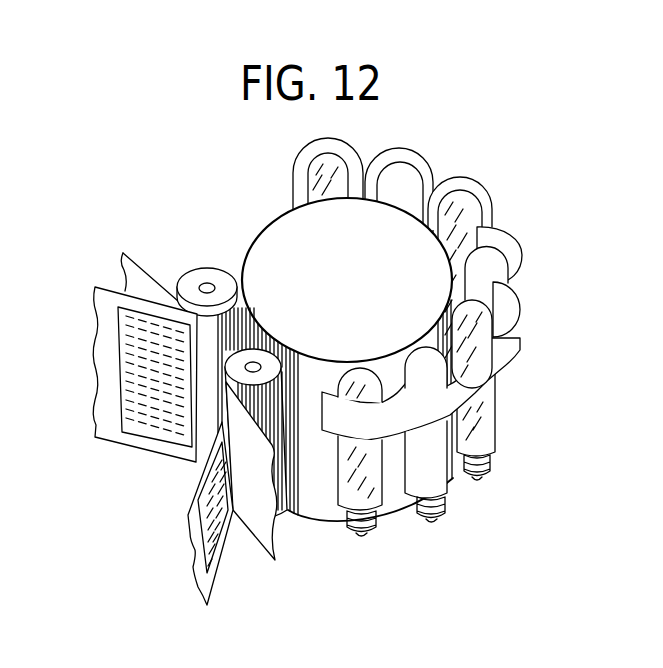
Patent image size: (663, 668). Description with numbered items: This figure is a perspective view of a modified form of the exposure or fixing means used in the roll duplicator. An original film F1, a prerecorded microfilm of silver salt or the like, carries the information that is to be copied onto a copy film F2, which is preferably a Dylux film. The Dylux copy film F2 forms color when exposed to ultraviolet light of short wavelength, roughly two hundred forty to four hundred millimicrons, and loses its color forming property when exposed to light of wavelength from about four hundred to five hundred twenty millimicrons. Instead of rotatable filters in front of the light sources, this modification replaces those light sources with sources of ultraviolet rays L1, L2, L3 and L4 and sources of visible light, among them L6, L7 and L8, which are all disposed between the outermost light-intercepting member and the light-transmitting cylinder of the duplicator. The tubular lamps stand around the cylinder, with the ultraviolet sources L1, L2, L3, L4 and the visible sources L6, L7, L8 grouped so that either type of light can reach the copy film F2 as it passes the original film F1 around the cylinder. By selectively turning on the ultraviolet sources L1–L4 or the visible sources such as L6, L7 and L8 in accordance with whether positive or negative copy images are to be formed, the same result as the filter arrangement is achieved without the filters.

The source of ultraviolet rays L1 is at (480, 323).
The source of ultraviolet rays L2 is at (474, 196).
The source of ultraviolet rays L3 is at (318, 170).
The source of ultraviolet rays L4 is at (358, 378).
The source of visible light L6 is at (424, 358).
The source of visible light L7 is at (488, 264).
The source of visible light L8 is at (398, 175).
The original film F1 is at (107, 353).
The copy film F2 is at (136, 272).